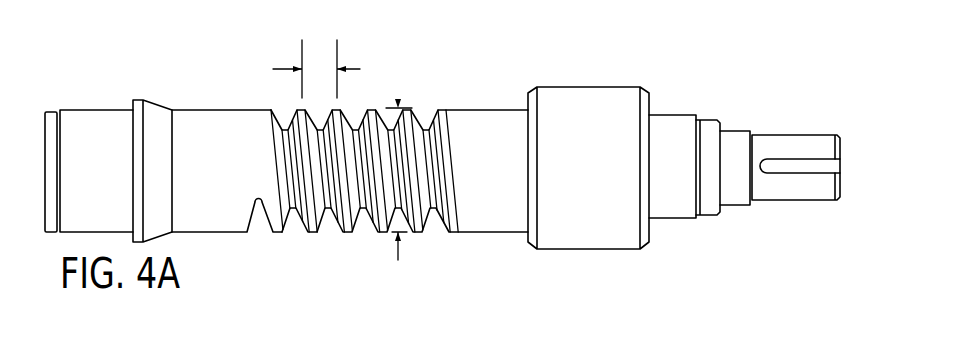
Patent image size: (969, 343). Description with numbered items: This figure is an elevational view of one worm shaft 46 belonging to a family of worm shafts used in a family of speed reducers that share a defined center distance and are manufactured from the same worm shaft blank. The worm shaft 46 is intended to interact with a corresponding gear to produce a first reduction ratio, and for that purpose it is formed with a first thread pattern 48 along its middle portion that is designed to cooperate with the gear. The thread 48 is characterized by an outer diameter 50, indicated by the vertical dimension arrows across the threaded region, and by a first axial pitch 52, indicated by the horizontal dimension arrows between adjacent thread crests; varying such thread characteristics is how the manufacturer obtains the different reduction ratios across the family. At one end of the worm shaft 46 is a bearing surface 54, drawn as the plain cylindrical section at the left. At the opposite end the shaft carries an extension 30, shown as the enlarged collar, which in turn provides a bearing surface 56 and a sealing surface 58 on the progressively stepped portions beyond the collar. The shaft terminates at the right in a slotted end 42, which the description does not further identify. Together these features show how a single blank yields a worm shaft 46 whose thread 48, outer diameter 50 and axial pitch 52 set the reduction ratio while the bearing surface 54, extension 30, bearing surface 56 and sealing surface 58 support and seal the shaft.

The bearing surface 54 is at (100, 112).
The worm shaft 46 is at (208, 105).
The first thread pattern 48 is at (370, 108).
The first axial pitch 52 is at (318, 67).
The outer diameter 50 is at (398, 100).
The extension 30 is at (635, 80).
The bearing surface 56 is at (668, 115).
The sealing surface 58 is at (707, 117).
The slotted drive tip 42 is at (790, 135).